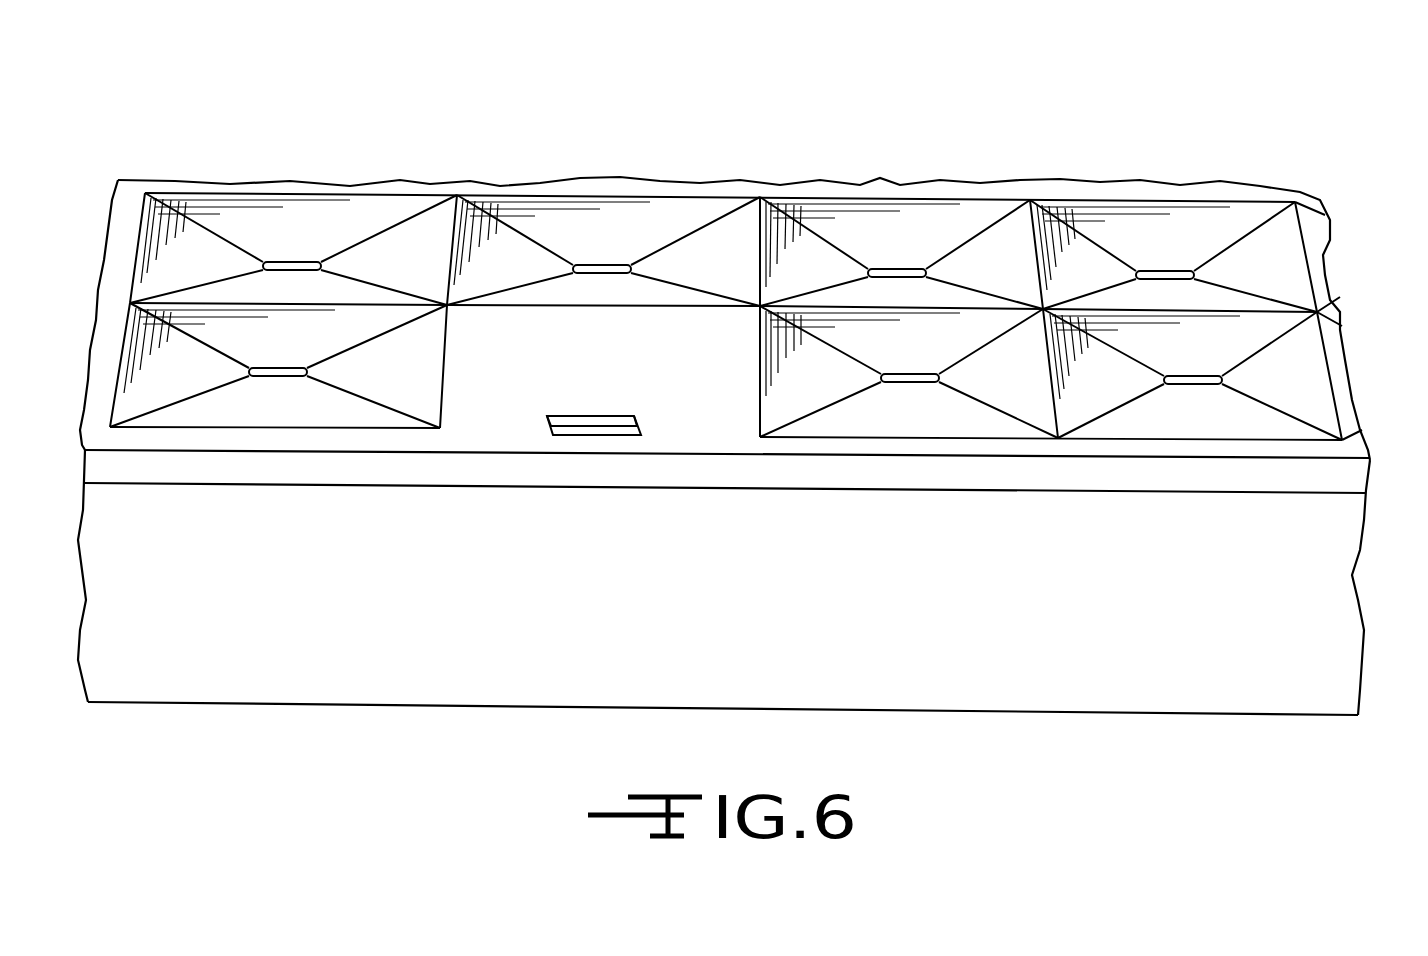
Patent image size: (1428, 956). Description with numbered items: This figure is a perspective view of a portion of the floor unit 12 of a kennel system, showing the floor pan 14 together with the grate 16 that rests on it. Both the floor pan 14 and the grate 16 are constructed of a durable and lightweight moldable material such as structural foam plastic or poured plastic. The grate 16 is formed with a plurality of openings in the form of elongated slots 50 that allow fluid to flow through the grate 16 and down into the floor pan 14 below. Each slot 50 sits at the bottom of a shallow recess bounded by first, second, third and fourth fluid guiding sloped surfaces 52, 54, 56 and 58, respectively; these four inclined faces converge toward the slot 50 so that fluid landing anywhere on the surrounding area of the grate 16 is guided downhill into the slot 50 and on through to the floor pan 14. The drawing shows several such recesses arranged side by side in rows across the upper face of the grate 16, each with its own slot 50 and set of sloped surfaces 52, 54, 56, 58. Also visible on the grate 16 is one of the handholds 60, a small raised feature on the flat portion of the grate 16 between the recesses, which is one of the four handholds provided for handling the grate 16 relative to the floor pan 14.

The floor unit 12 is at (1293, 205).
The floor pan 14 is at (1278, 612).
The grate 16 is at (1270, 267).
The elongated slot 50 is at (300, 258).
The first fluid guiding sloped surface 52 is at (603, 216).
The second fluid guiding sloped surface 54 is at (745, 232).
The third fluid guiding sloped surface 56 is at (608, 292).
The fourth fluid guiding sloped surface 58 is at (512, 262).
The handhold 60 is at (600, 440).